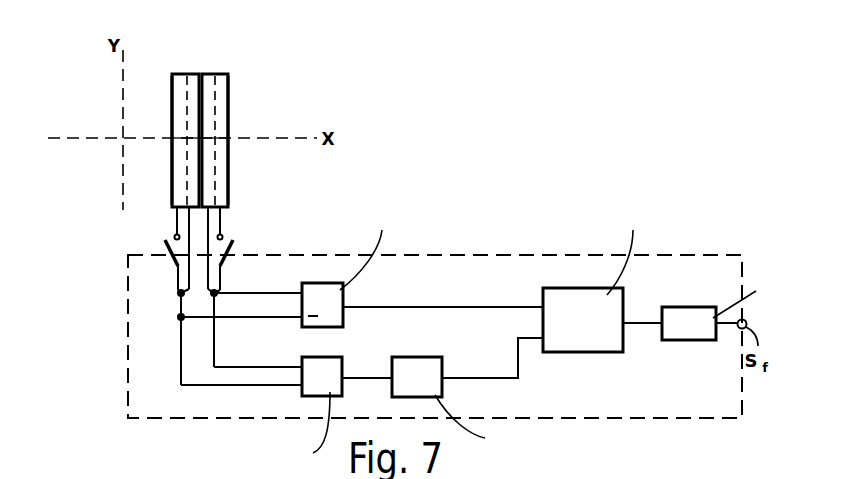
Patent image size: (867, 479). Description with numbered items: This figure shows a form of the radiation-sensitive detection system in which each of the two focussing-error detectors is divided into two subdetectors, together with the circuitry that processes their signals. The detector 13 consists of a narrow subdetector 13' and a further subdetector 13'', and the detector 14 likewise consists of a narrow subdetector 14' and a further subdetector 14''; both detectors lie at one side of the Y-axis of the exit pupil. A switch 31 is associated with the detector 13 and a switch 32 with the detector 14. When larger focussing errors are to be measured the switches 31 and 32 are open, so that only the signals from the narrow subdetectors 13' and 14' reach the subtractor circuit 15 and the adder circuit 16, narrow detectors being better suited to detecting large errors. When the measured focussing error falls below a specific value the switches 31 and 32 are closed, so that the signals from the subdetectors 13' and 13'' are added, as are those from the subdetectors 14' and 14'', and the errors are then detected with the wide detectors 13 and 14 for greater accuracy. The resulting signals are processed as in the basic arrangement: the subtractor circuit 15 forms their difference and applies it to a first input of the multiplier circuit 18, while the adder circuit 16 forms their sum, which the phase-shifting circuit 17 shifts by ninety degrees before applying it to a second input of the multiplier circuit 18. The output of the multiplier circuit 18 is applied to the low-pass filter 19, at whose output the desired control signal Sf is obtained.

The detector 13 is at (167, 140).
The narrow subdetector 13' is at (175, 120).
The subdetector 13'' is at (155, 140).
The detector 14 is at (228, 140).
The narrow subdetector 14' is at (224, 120).
The subdetector 14'' is at (249, 140).
The switch 31 is at (167, 241).
The switch 32 is at (235, 243).
The subtractor circuit 15 is at (314, 283).
The adder circuit 16 is at (330, 357).
The phase-shifting circuit 17 is at (418, 357).
The multiplier circuit 18 is at (581, 352).
The low-pass filter 19 is at (685, 341).